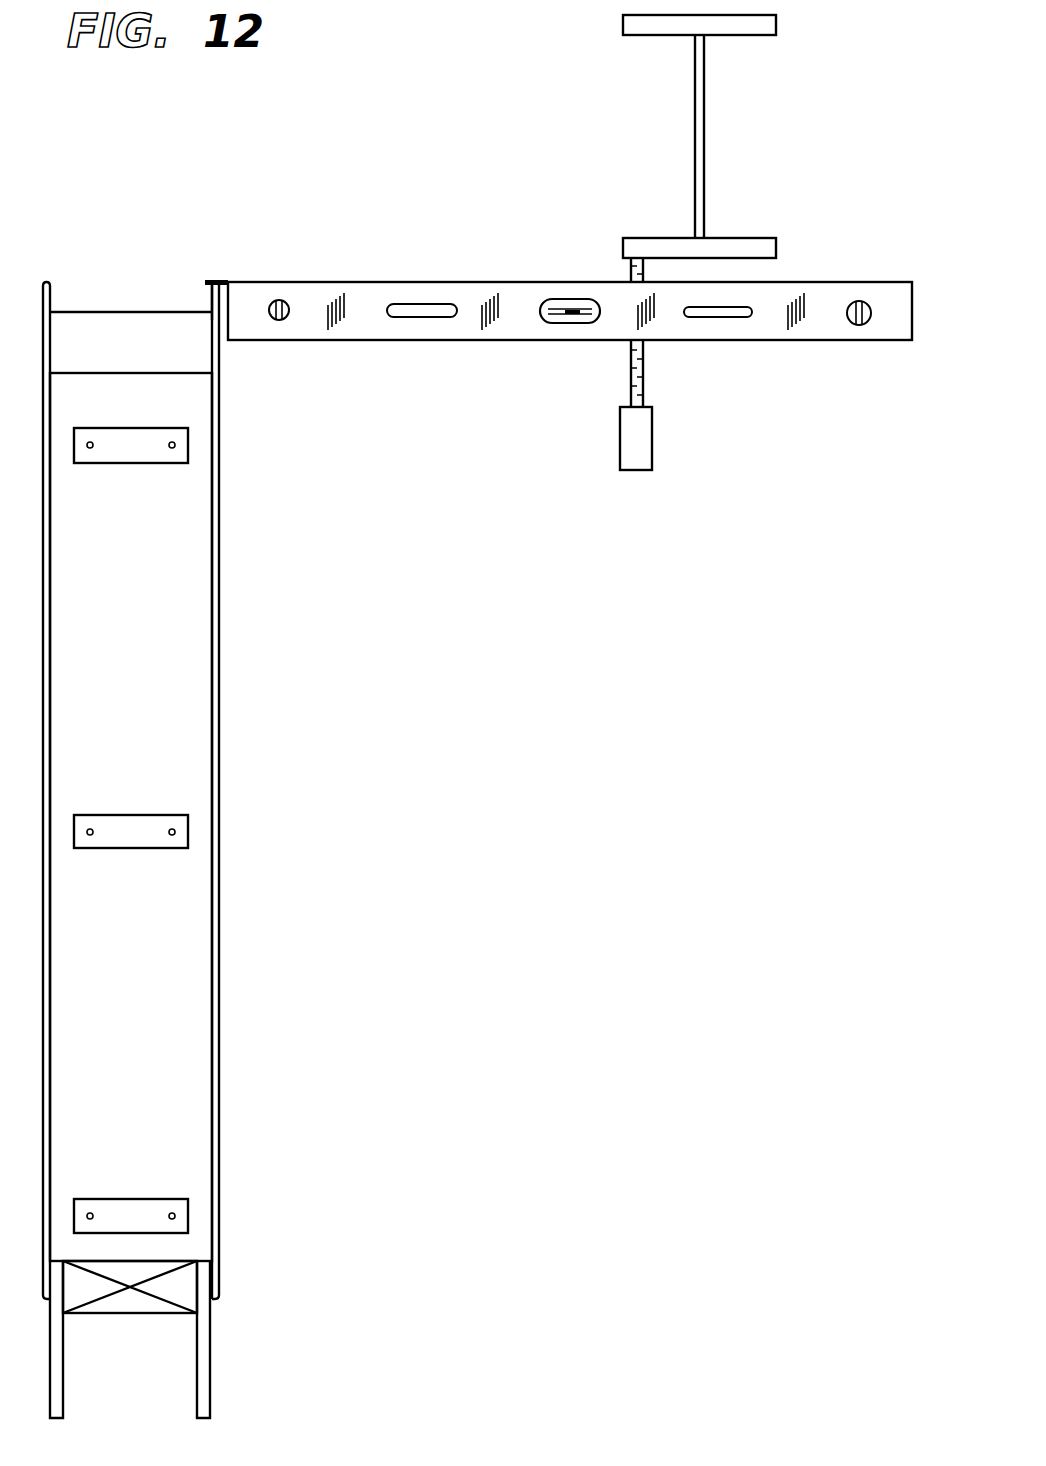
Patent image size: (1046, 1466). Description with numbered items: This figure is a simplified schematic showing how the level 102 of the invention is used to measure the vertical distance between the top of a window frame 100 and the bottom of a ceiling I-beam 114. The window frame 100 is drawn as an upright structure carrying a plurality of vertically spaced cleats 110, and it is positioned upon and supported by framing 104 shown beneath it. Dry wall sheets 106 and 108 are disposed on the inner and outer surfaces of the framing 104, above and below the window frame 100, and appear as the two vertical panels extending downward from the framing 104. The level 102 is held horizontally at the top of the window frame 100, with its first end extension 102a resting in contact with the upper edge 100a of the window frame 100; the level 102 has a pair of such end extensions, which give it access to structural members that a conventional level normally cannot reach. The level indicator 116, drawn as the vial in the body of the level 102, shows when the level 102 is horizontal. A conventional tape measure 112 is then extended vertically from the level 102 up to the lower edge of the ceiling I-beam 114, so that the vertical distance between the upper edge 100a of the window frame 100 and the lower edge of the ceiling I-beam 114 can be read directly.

The window frame 100 is at (224, 537).
The upper edge of the window frame 100a is at (207, 296).
The level 102 is at (790, 356).
The first end extension 102a is at (222, 281).
The framing 104 is at (188, 1293).
The dry wall sheet 106 is at (63, 1357).
The dry wall sheet 108 is at (212, 1355).
The cleats 110 is at (116, 1191).
The tape measure 112 is at (652, 425).
The ceiling I-beam 114 is at (641, 42).
The level indicator 116 is at (565, 324).